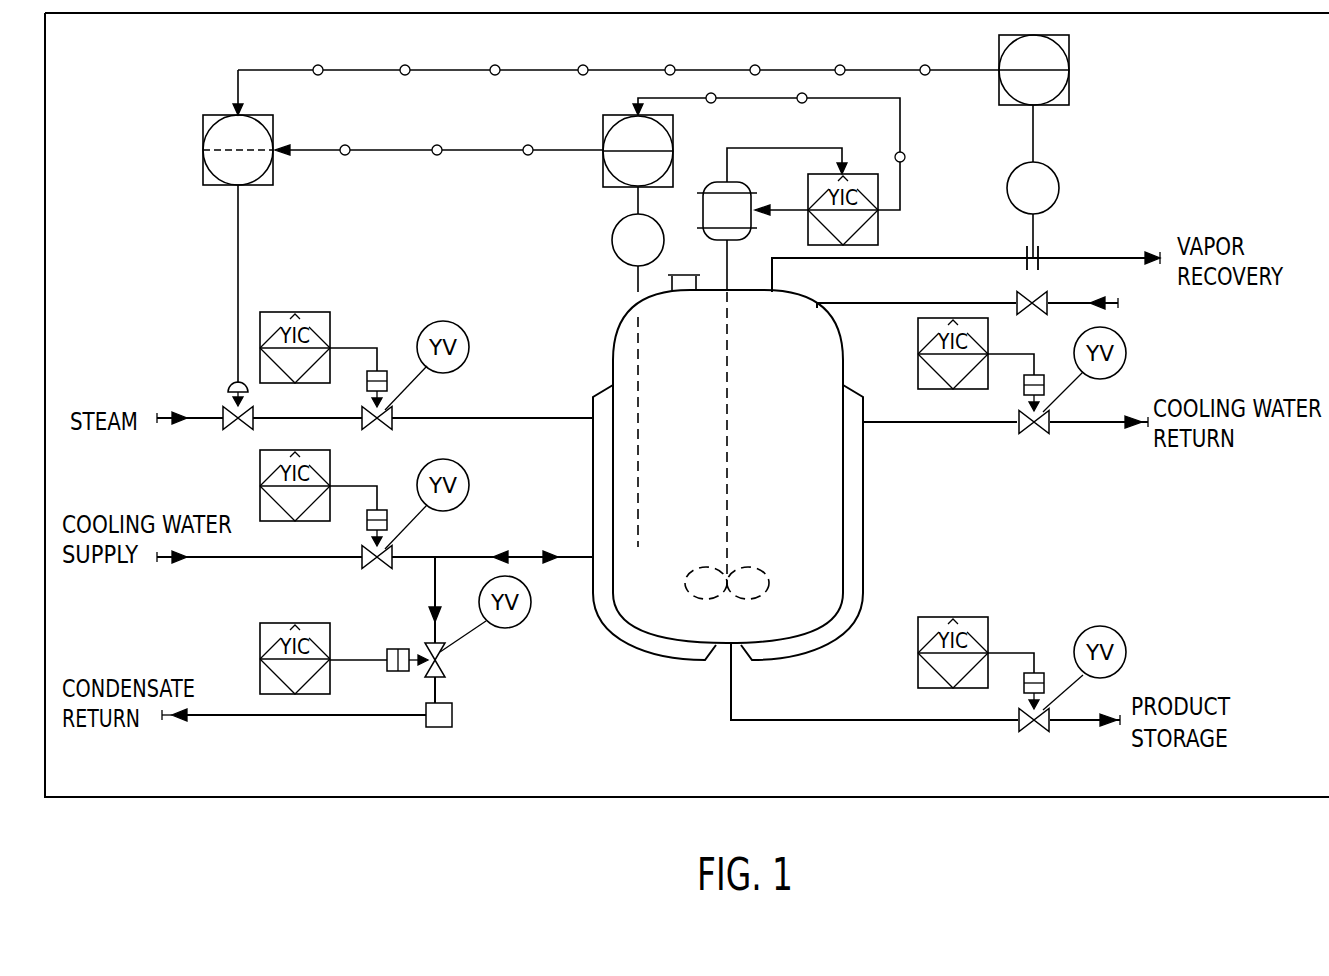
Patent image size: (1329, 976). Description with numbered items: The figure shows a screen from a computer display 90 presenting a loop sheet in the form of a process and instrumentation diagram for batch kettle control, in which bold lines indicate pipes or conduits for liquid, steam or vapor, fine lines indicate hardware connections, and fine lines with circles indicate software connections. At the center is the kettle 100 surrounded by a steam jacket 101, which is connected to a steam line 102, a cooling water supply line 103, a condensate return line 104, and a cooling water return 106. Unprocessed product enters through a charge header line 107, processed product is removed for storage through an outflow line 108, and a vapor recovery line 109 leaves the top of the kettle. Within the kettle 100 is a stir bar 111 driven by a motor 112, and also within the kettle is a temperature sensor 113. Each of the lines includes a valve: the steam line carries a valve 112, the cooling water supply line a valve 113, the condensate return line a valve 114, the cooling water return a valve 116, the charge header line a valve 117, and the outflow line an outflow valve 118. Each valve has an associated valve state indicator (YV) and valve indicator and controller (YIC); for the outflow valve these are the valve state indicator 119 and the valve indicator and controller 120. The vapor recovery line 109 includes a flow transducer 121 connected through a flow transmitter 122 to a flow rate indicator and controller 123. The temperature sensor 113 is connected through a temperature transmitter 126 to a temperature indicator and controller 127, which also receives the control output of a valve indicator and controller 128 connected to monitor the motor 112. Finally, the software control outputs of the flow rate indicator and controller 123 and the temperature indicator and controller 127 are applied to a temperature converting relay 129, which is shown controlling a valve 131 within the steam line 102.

The computer display 90 is at (47, 268).
The kettle 100 is at (845, 508).
The steam jacket 101 is at (863, 578).
The steam line 102 is at (491, 421).
The cooling water supply line 103 is at (250, 563).
The condensate return line 104 is at (322, 716).
The cooling water return 106 is at (902, 424).
The charge header line 107 is at (882, 306).
The outflow line 108 is at (808, 721).
The vapor recovery line 109 is at (953, 260).
The stir bar 111 is at (727, 455).
The motor 112 is at (745, 203).
The temperature sensor 113 is at (638, 452).
The valve 114 is at (442, 663).
The valve 116 is at (1032, 437).
The valve 117 is at (1036, 300).
The outflow valve 118 is at (1032, 736).
The valve state indicator 119 is at (1118, 623).
The valve indicator and controller 120 is at (960, 620).
The flow transducer 121 is at (1040, 252).
The flow transmitter 122 is at (1058, 198).
The flow rate indicator and controller 123 is at (1060, 97).
The temperature transmitter 126 is at (612, 236).
The temperature indicator and controller 127 is at (660, 167).
The valve indicator and controller 128 is at (877, 237).
The temperature converting relay 129 is at (258, 187).
The valve 131 is at (240, 427).